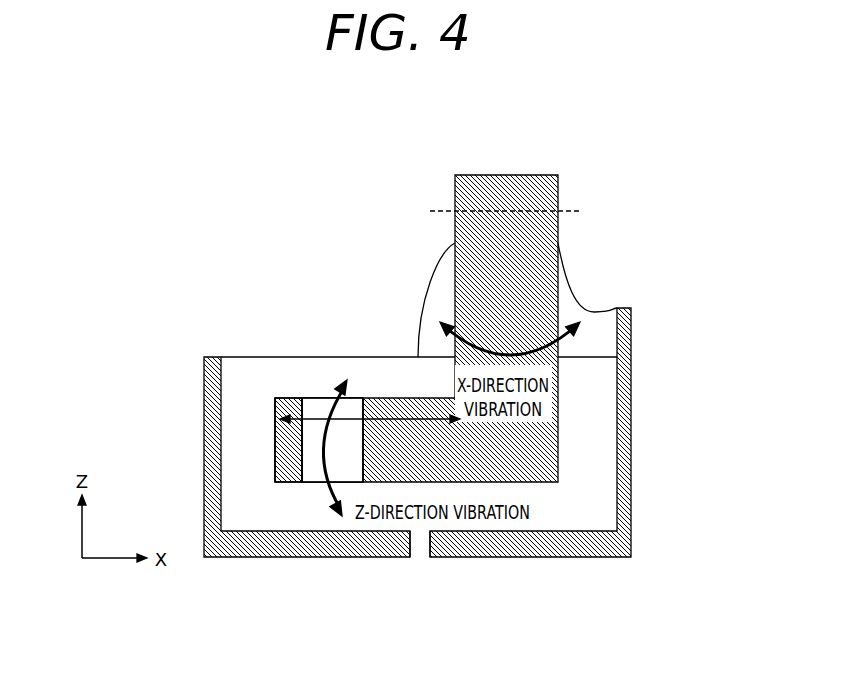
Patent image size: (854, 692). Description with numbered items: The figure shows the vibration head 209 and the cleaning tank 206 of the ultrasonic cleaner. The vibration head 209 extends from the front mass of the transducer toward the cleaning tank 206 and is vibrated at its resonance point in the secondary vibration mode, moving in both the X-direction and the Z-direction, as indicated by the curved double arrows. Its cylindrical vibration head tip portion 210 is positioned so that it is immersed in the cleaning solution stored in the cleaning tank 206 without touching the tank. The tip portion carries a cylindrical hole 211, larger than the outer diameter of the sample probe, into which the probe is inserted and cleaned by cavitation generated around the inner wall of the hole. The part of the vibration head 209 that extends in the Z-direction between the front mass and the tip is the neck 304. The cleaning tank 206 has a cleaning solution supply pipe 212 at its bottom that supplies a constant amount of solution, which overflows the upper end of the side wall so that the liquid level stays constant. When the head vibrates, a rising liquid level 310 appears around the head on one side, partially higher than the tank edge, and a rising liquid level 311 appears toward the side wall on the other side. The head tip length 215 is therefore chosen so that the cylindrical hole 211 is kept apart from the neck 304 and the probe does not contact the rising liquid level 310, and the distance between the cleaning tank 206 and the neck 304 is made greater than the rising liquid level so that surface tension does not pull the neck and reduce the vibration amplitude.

The cleaning tank 206 is at (205, 418).
The vibration head 209 is at (507, 193).
The vibration head tip portion 210 is at (288, 398).
The cylindrical hole 211 is at (312, 398).
The cleaning solution supply pipe 212 is at (419, 553).
The head tip length 215 is at (470, 455).
The neck 304 is at (540, 318).
The rising liquid level 310 is at (440, 256).
The rising liquid level 311 is at (565, 283).